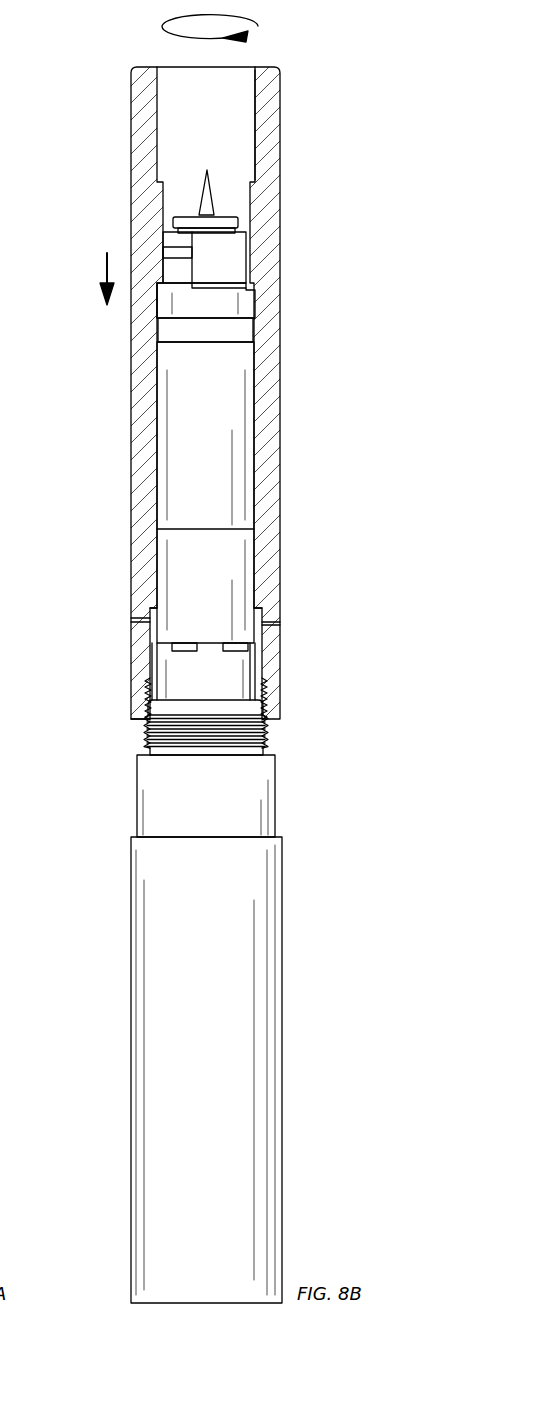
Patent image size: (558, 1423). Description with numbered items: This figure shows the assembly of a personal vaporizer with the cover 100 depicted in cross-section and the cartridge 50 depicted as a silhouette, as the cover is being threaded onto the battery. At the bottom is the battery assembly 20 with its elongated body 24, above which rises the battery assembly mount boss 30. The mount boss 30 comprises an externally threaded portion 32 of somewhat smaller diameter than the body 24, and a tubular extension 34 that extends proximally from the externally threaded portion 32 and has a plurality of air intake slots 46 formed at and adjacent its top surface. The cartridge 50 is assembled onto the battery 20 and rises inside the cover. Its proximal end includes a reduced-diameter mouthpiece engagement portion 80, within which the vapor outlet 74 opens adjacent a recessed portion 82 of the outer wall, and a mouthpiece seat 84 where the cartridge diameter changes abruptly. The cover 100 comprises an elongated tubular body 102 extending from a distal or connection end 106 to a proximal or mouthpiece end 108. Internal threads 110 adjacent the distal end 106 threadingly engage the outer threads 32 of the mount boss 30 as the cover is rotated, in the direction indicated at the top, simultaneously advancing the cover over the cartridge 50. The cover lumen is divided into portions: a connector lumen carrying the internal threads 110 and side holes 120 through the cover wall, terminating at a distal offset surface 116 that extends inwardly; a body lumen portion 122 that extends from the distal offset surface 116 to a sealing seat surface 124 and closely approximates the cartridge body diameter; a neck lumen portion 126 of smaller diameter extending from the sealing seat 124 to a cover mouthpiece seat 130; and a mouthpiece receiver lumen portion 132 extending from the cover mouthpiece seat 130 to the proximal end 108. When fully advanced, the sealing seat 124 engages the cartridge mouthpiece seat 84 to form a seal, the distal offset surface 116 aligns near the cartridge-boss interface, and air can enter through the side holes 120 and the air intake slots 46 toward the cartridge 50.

The battery assembly 20 is at (112, 1058).
The elongated body 24 is at (240, 1010).
The battery assembly mount boss 30 is at (133, 750).
The externally threaded portion 32 is at (268, 742).
The extension 34 is at (223, 673).
The air intake slots 46 is at (238, 647).
The cartridge 50 is at (215, 445).
The vapor outlet 74 is at (218, 286).
The mouthpiece engagement portion 80 is at (159, 292).
The recessed portion 82 is at (247, 250).
The mouthpiece seat 84 is at (252, 317).
The cover 100 is at (114, 156).
The elongated tubular body 102 is at (268, 395).
The distal end 106 is at (137, 722).
The proximal end 108 is at (144, 63).
The internal threads 110 is at (265, 707).
The distal offset surface 116 is at (150, 625).
The side holes 120 is at (138, 620).
The body lumen portion 122 is at (158, 315).
The sealing seat surface 124 is at (255, 303).
The neck lumen portion 126 is at (228, 198).
The cover mouthpiece seat 130 is at (256, 172).
The mouthpiece receiver lumen portion 132 is at (216, 95).